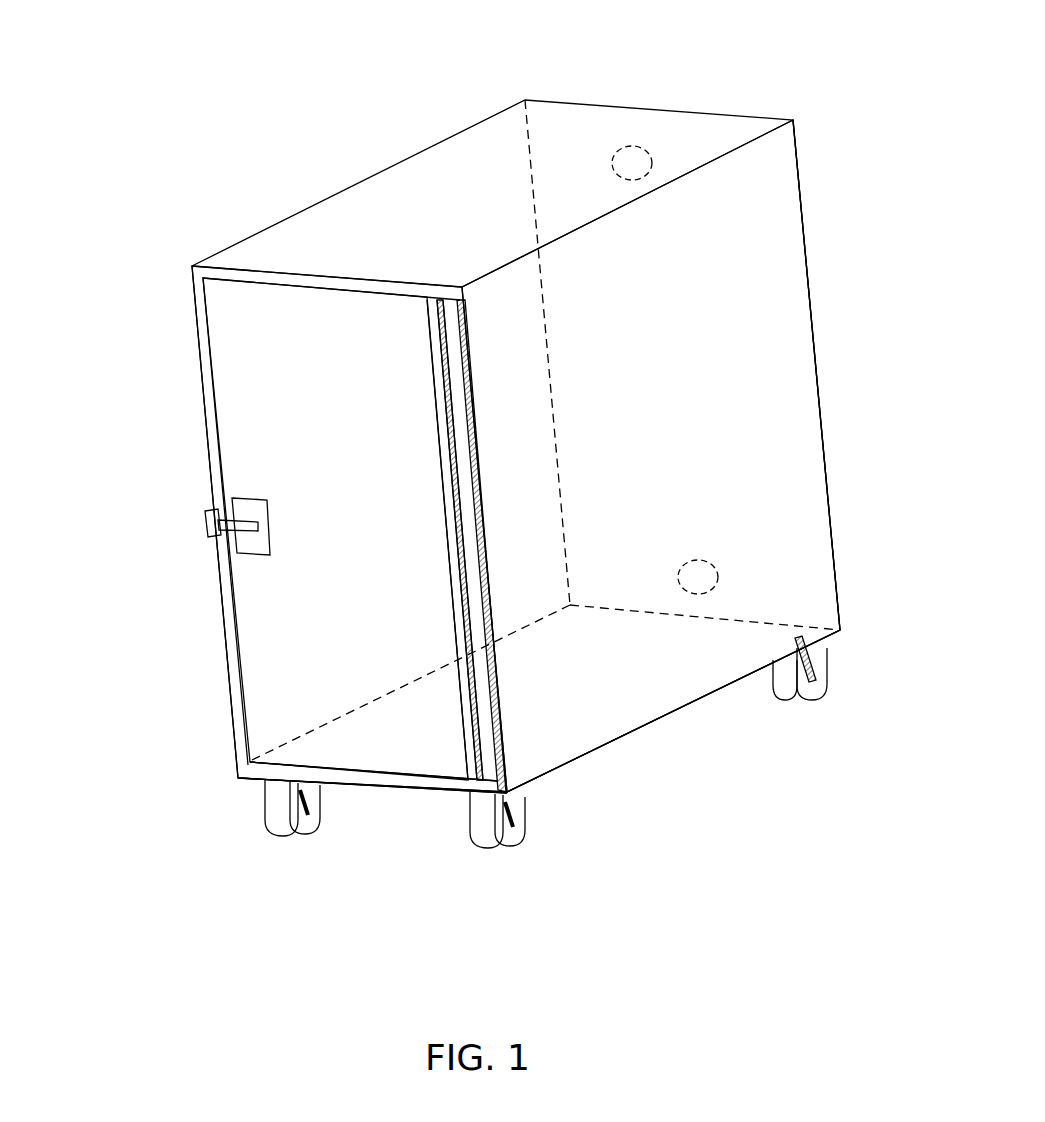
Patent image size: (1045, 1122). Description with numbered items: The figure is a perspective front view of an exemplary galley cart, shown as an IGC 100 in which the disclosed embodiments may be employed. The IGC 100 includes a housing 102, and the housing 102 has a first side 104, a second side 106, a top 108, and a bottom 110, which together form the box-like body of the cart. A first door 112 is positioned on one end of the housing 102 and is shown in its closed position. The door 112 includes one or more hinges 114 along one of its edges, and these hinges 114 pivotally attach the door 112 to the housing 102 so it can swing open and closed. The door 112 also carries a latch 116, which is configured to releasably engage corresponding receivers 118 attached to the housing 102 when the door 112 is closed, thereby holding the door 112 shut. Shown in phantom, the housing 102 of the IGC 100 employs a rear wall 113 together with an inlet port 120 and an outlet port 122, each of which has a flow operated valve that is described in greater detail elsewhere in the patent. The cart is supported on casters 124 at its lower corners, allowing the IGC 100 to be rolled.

The IGC 100 is at (268, 145).
The housing 102 is at (393, 163).
The first side 104 is at (722, 465).
The second side 106 is at (196, 357).
The top 108 is at (542, 140).
The bottom 110 is at (632, 735).
The first door 112 is at (313, 610).
The rear wall 113 is at (808, 273).
The hinges 114 is at (490, 705).
The latch 116 is at (236, 560).
The receivers 118 is at (207, 535).
The inlet port 120 is at (638, 147).
The outlet port 122 is at (703, 560).
The casters 124 is at (280, 825).